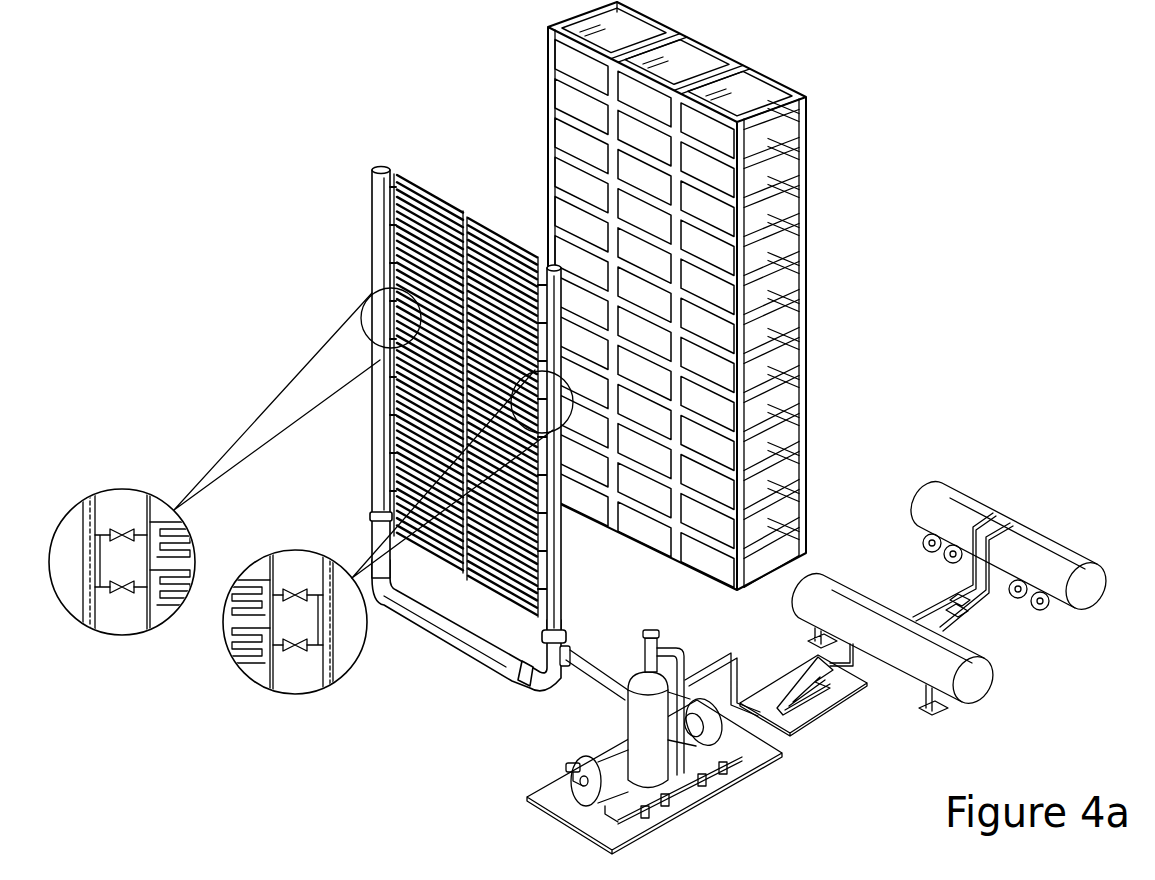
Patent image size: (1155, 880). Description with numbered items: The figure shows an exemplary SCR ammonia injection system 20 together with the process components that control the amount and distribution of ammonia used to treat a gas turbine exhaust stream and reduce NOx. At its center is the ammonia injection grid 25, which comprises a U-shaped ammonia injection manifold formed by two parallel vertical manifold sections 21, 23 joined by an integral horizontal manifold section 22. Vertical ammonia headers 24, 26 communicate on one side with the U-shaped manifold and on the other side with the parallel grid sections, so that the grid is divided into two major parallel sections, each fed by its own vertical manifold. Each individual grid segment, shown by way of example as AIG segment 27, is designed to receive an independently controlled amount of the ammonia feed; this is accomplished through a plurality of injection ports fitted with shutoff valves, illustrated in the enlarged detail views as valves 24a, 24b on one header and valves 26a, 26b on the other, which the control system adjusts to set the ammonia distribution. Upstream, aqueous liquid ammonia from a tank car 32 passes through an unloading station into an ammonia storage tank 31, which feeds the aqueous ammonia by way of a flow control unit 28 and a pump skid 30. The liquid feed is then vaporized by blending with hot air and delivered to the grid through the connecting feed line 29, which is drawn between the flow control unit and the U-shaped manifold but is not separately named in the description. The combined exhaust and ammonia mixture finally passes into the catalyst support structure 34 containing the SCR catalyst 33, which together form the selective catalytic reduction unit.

The SCR injection system 20 is at (483, 743).
The vertical manifold section 21 is at (373, 233).
The horizontal manifold section 22 is at (442, 622).
The vertical manifold section 23 is at (556, 597).
The vertical ammonia header 24 is at (418, 552).
The shutoff valve 24a is at (300, 653).
The shutoff valve 24b is at (297, 587).
The ammonia injection grid 25 is at (437, 381).
The vertical ammonia header 26 is at (230, 478).
The shutoff valve 26a is at (120, 594).
The shutoff valve 26b is at (120, 528).
The AIG segment 27 is at (398, 460).
The flow control unit 28 is at (753, 760).
The refrigerant pipe 29 is at (602, 678).
The pump skid 30 is at (806, 713).
The ammonia storage tank 31 is at (840, 598).
The tank car 32 is at (958, 503).
The SCR catalyst 33 is at (674, 296).
The catalyst support structure 34 is at (712, 203).